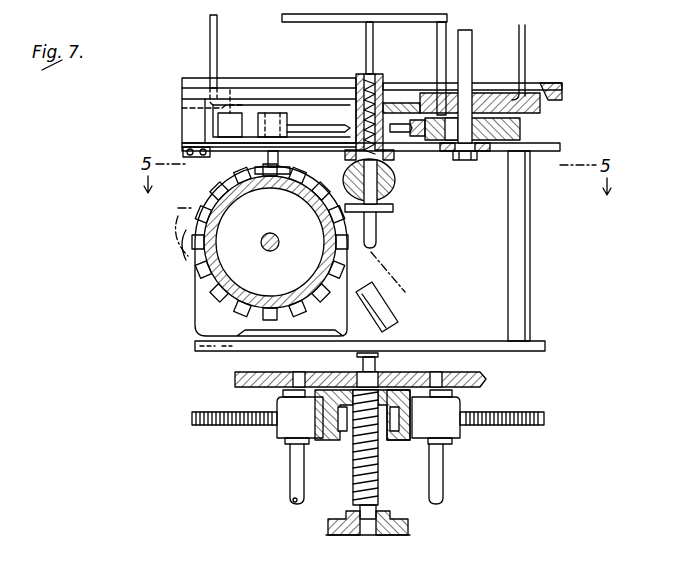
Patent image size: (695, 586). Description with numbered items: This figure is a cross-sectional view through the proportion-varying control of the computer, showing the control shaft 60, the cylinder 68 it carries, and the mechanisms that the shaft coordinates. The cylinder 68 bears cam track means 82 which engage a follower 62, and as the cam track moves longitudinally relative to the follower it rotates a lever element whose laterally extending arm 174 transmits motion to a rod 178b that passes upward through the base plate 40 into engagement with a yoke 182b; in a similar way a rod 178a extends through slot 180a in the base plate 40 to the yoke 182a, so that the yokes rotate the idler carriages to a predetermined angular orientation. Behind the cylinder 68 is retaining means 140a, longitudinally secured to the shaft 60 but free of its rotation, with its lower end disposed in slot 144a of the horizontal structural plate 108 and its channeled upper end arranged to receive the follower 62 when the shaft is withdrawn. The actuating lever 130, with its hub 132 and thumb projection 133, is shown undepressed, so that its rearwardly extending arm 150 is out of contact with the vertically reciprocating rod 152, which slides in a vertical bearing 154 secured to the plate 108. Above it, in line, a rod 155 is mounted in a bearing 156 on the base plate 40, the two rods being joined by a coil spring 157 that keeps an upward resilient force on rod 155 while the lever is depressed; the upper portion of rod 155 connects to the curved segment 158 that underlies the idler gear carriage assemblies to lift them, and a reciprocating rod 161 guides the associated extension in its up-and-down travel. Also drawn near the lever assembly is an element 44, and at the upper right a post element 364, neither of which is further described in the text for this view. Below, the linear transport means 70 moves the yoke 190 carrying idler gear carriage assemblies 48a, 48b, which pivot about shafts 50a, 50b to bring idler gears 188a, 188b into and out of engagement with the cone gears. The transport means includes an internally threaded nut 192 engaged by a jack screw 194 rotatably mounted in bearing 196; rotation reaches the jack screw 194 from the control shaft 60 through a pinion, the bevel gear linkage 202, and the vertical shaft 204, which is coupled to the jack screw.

The base plate 40 is at (182, 96).
The rod 44 is at (390, 233).
The idler gear carriage assembly 48a is at (290, 434).
The idler gear carriage assembly 48b is at (452, 432).
The shaft 50a is at (290, 486).
The shaft 50b is at (443, 494).
The control shaft 60 is at (262, 243).
The follower 62 is at (280, 159).
The cylinder 68 is at (222, 198).
The linear transport means 70 is at (382, 497).
The cam track means 82 is at (196, 260).
The structural plate 108 is at (560, 150).
The actuating lever 130 is at (410, 294).
The hub 132 is at (178, 234).
The thumb projection 133 is at (178, 208).
The retaining means 140a is at (190, 320).
The slot 144a is at (200, 346).
The rearwardly extending arm 150 is at (400, 324).
The reciprocating rod 152 is at (376, 248).
The vertical bearing 154 is at (394, 158).
The rod 155 is at (366, 40).
The bearing 156 is at (384, 92).
The coil spring 157 is at (395, 182).
The curved segment 158 is at (296, 22).
The reciprocating rod 161 is at (437, 34).
The arm 174 is at (520, 130).
The rod 178a is at (520, 110).
The rod 178b is at (182, 108).
The slot 180a is at (562, 90).
The yoke 182a is at (525, 60).
The yoke 182b is at (210, 34).
The idler gear 188a is at (196, 426).
The idler gear 188b is at (540, 426).
The yoke 190 is at (392, 440).
The internally threaded nut 192 is at (345, 434).
The jack screw 194 is at (353, 476).
The bearing 196 is at (378, 536).
The bevel gear linkage 202 is at (393, 208).
The vertical shaft 204 is at (376, 364).
The post 364 is at (472, 50).